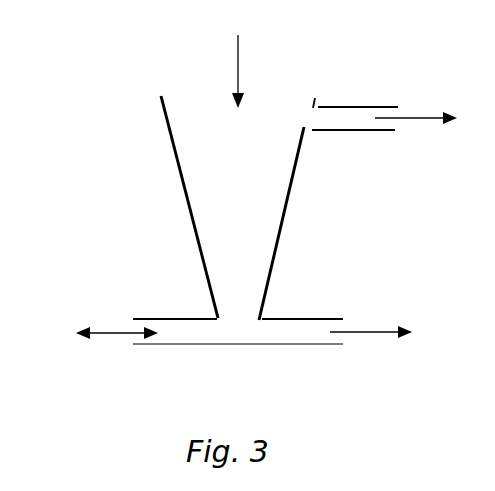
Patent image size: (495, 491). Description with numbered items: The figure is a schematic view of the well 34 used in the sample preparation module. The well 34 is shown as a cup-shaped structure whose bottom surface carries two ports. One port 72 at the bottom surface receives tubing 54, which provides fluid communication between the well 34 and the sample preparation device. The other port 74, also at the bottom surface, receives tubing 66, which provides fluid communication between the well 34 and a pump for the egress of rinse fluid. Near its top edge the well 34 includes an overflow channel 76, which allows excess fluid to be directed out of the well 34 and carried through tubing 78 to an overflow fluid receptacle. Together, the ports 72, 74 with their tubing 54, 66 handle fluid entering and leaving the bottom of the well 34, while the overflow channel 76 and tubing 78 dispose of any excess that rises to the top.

The well 34 is at (97, 173).
The tubing 54 is at (147, 340).
The tubing 66 is at (287, 319).
The port 72 is at (213, 327).
The port 74 is at (262, 329).
The overflow channel 76 is at (305, 120).
The tubing 78 is at (348, 131).